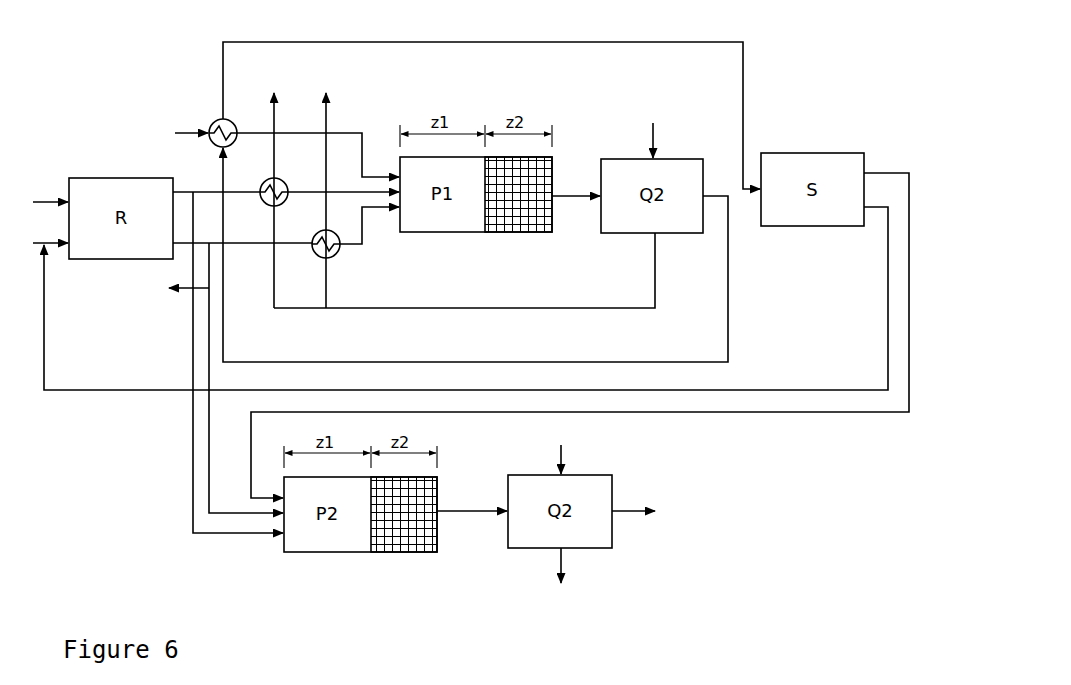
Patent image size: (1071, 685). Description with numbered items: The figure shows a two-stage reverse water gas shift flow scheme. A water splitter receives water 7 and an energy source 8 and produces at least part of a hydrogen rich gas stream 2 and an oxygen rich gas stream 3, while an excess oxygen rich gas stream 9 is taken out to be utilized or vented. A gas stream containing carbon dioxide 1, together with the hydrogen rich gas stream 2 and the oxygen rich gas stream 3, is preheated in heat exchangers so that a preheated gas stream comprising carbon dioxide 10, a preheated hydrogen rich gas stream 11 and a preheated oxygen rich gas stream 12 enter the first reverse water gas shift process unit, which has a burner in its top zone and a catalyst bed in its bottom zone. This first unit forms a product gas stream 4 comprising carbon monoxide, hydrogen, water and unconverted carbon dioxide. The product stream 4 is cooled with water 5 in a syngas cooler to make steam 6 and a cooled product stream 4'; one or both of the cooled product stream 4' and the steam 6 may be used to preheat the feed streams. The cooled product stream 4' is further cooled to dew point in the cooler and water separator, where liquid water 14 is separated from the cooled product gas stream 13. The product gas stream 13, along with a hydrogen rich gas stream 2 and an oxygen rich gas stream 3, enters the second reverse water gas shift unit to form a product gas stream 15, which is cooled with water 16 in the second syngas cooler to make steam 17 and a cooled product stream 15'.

The gas stream containing carbon dioxide 1 is at (181, 133).
The hydrogen rich gas stream 2 is at (228, 352).
The oxygen rich gas stream 3 is at (242, 367).
The product gas stream 4 is at (576, 180).
The cooled product stream 4' is at (491, 202).
The water 5 is at (653, 128).
The steam 6 is at (462, 185).
The water 7 is at (41, 243).
The energy source 8 is at (41, 202).
The excess oxygen rich gas stream 9 is at (180, 288).
The preheated gas stream comprising carbon dioxide 10 is at (318, 142).
The preheated hydrogen rich gas stream 11 is at (343, 181).
The preheated oxygen rich gas stream 12 is at (369, 225).
The cooled product gas stream 13 is at (582, 331).
The liquid water 14 is at (466, 298).
The product gas stream 15 is at (472, 494).
The cooled product stream 15' is at (648, 511).
The water 16 is at (560, 447).
The steam 17 is at (560, 579).